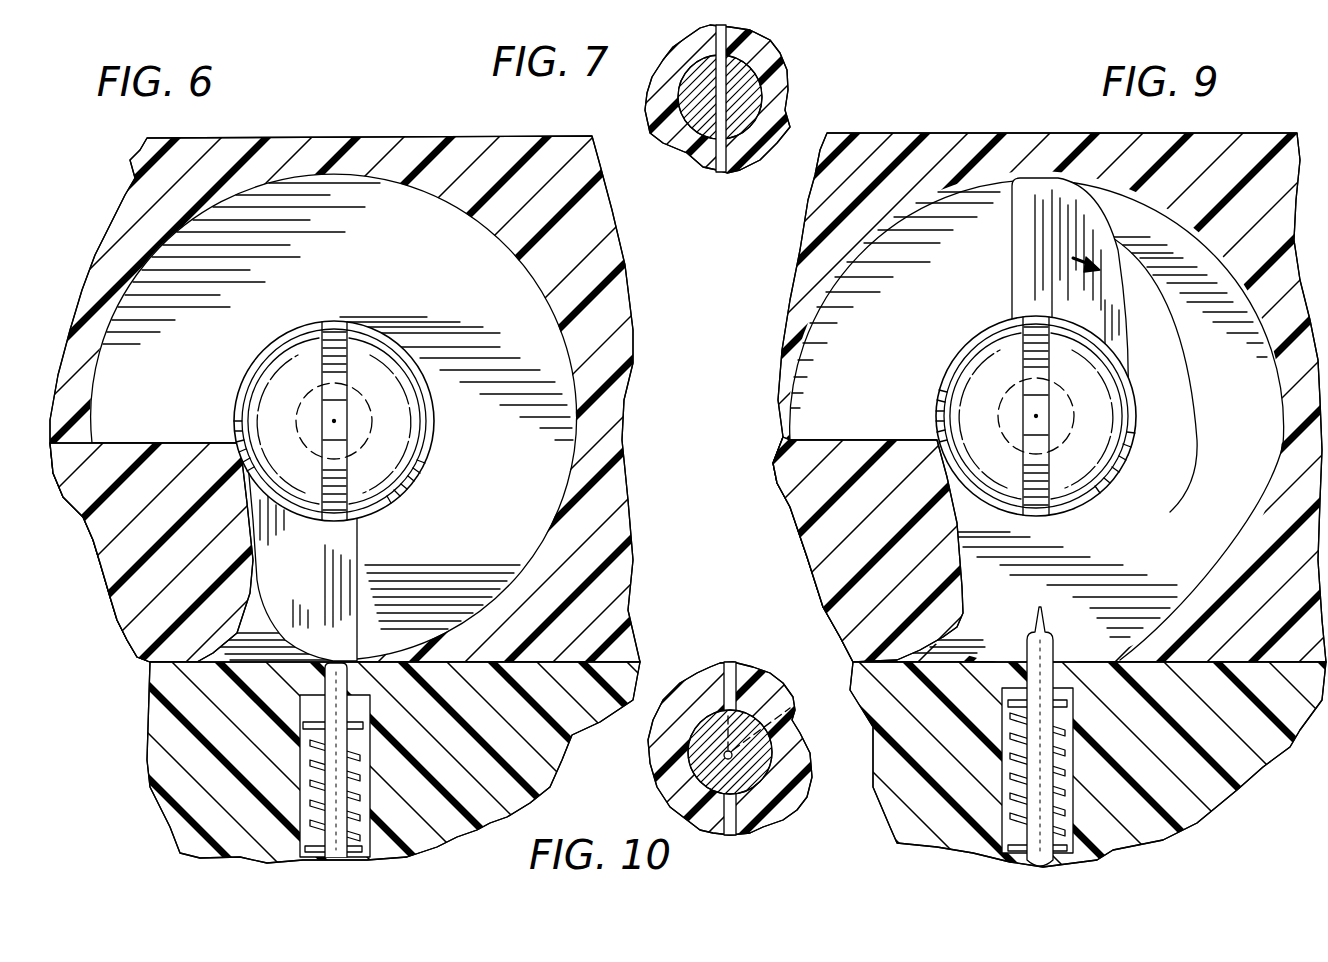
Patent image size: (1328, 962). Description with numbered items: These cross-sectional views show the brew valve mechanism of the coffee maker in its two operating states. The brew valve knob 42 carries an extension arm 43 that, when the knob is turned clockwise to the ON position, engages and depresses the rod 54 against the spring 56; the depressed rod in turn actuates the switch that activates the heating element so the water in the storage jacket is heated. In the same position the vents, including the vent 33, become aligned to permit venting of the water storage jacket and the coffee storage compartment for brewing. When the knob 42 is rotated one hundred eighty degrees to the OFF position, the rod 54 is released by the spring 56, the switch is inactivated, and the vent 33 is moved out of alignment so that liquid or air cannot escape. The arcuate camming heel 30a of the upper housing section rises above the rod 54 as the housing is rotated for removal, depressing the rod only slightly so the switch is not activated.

In FIG. 6, the arcuate camming heal 30a is at (150, 668).
In FIG. 9, the arcuate camming heal 30a is at (947, 633).
In FIG. 7, the vent 33 is at (733, 70).
In FIG. 10, the vent 33 is at (735, 672).
In FIG. 6, the brew valve knob 42 is at (357, 357).
In FIG. 9, the brew valve knob 42 is at (1085, 467).
In FIG. 6, the extension arm 43 is at (375, 542).
In FIG. 9, the extension arm 43 is at (1018, 240).
In FIG. 6, the rod 54 is at (330, 813).
In FIG. 9, the rod 54 is at (1073, 808).
In FIG. 6, the spring 56 is at (373, 815).
In FIG. 9, the spring 56 is at (1007, 817).